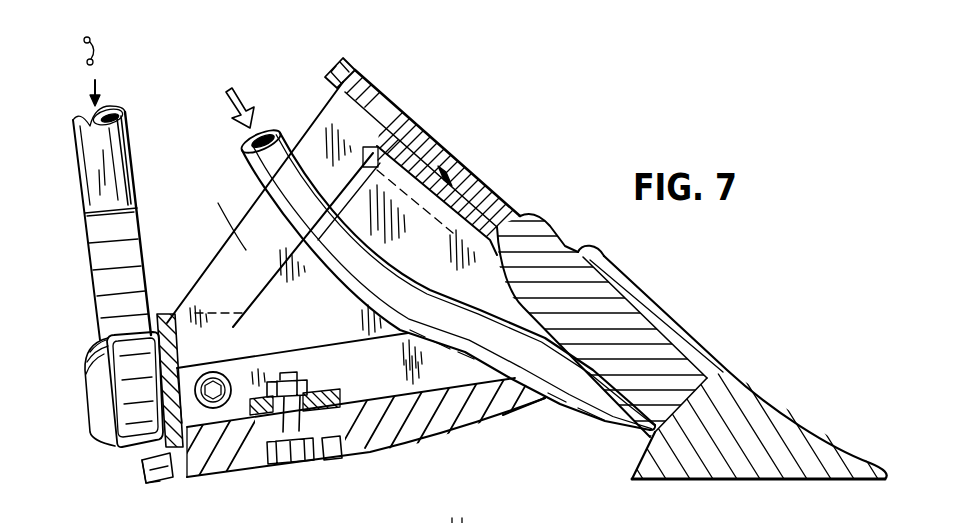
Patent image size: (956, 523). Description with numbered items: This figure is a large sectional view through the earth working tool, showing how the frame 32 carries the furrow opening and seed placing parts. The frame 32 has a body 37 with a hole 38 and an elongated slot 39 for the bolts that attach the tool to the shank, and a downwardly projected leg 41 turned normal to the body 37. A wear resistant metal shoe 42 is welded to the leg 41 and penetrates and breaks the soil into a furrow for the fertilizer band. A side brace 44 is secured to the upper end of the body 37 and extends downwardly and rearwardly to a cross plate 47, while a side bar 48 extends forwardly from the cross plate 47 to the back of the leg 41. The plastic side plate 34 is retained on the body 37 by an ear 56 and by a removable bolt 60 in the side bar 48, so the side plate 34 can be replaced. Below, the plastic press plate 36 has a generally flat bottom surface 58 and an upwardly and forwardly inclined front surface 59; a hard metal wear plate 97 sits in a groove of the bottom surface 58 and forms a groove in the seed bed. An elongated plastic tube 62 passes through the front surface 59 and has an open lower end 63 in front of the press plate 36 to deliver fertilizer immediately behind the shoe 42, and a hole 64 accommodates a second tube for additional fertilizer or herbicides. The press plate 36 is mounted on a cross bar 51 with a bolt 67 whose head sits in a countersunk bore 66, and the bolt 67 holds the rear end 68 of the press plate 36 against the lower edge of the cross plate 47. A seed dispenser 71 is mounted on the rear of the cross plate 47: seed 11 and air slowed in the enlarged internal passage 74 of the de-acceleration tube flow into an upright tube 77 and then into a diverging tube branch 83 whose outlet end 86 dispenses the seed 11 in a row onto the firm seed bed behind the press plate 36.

The seed 11 is at (90, 40).
The frame 32 is at (306, 100).
The side plate 34 is at (387, 198).
The press plate 36 is at (376, 460).
The body 37 is at (345, 58).
The hole 38 is at (466, 178).
The elongated slot 39 is at (375, 93).
The leg 41 is at (615, 325).
The shoe 42 is at (785, 440).
The side brace 44 is at (430, 278).
The cross plate 47 is at (165, 316).
The side bar 48 is at (358, 362).
The cross bar 51 is at (335, 387).
The ear 56 is at (420, 185).
The bottom surface 58 is at (238, 472).
The front surface 59 is at (493, 418).
The bolt 60 is at (218, 378).
The tube 62 is at (413, 300).
The open lower end 63 is at (583, 412).
The hole 64 is at (430, 440).
The countersunk bore 66 is at (339, 461).
The bolt 67 is at (312, 464).
The rear end 68 is at (172, 480).
The seed dispenser 71 is at (74, 263).
The internal passage 74 is at (477, 520).
The upright tube 77 is at (92, 152).
The tube branch 83 is at (113, 302).
The outlet end 86 is at (137, 428).
The wear plate 97 is at (143, 478).